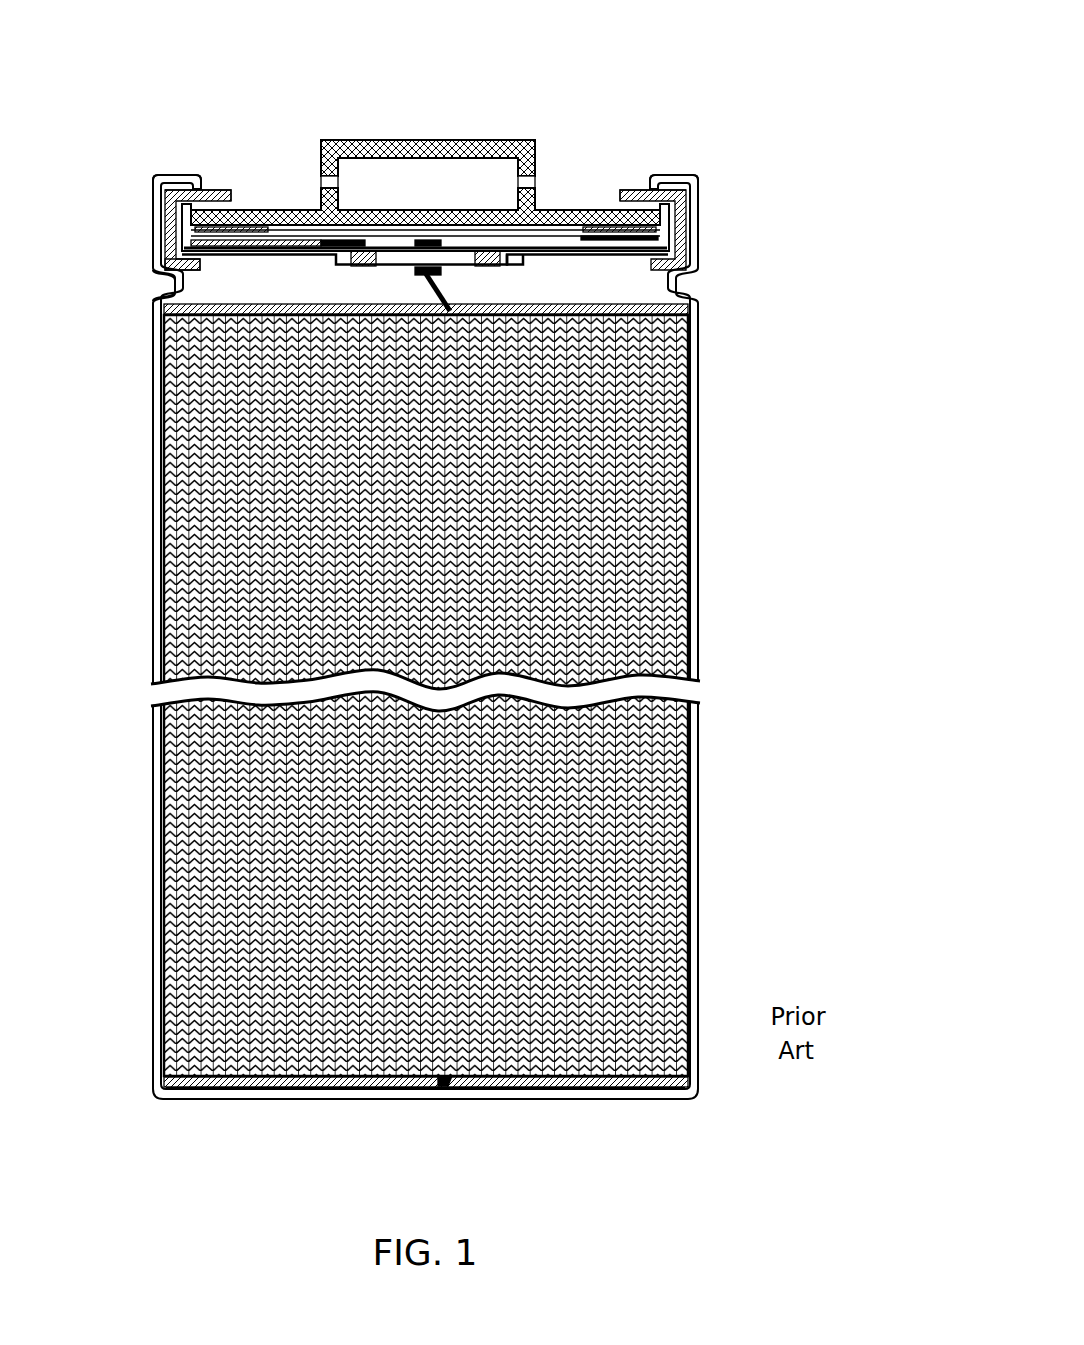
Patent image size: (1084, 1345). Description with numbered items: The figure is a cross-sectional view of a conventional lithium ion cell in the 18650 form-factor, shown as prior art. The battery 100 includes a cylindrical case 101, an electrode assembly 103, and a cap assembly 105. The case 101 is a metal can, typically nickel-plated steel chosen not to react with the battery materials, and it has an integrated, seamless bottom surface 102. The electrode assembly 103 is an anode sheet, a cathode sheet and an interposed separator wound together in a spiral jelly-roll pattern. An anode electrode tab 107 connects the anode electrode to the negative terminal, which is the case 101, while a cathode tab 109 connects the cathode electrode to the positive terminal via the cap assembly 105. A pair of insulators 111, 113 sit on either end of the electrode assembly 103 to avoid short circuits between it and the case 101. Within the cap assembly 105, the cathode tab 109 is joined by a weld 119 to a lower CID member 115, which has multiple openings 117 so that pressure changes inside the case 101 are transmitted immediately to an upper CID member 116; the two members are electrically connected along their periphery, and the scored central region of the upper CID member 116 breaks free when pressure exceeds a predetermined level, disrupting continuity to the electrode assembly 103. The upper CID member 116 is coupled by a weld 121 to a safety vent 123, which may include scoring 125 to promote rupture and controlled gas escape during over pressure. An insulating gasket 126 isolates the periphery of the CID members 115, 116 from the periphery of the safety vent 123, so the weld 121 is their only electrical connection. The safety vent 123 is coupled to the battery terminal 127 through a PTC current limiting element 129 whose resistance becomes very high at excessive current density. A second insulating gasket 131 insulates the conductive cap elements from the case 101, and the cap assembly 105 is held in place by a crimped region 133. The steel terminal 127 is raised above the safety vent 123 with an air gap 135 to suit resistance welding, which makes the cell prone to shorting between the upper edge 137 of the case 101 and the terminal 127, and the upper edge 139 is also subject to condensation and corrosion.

The battery 100 is at (508, 603).
The cylindrical case 101 is at (692, 612).
The bottom surface 102 is at (289, 1100).
The electrode assembly 103 is at (399, 588).
The cap assembly 105 is at (429, 169).
The anode electrode tab 107 is at (442, 1078).
The cathode tab 109 is at (426, 291).
The insulator 111 is at (615, 1078).
The insulator 113 is at (197, 306).
The lower CID member 115 is at (562, 247).
The upper CID member 116 is at (493, 248).
The openings 117 is at (356, 240).
The weld 119 is at (403, 264).
The weld 121 is at (449, 245).
The safety vent 123 is at (505, 225).
The scoring 125 is at (458, 221).
The insulating gasket 126 is at (160, 246).
The battery terminal 127 is at (372, 131).
The PTC current limiting element 129 is at (652, 205).
The second insulating gasket 131 is at (160, 208).
The crimped region 133 is at (703, 278).
The air gap 135 is at (400, 176).
The upper edge 137 is at (173, 157).
The upper edge 139 is at (205, 176).